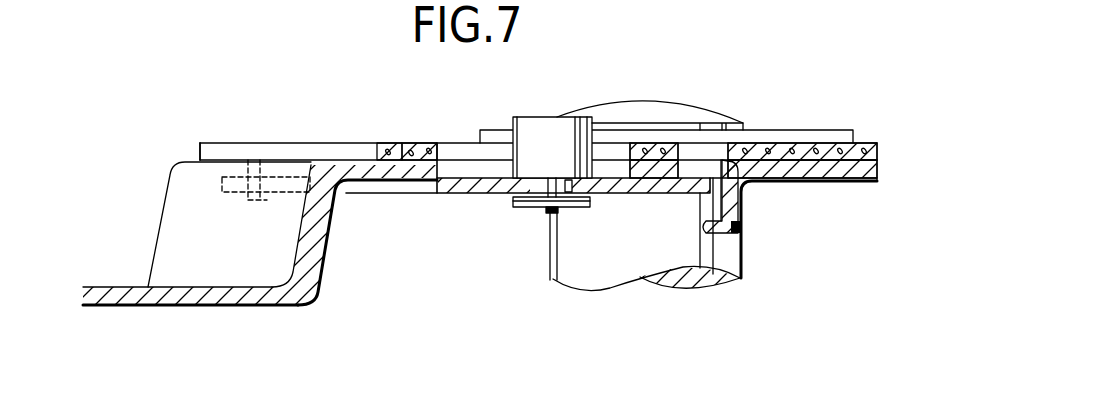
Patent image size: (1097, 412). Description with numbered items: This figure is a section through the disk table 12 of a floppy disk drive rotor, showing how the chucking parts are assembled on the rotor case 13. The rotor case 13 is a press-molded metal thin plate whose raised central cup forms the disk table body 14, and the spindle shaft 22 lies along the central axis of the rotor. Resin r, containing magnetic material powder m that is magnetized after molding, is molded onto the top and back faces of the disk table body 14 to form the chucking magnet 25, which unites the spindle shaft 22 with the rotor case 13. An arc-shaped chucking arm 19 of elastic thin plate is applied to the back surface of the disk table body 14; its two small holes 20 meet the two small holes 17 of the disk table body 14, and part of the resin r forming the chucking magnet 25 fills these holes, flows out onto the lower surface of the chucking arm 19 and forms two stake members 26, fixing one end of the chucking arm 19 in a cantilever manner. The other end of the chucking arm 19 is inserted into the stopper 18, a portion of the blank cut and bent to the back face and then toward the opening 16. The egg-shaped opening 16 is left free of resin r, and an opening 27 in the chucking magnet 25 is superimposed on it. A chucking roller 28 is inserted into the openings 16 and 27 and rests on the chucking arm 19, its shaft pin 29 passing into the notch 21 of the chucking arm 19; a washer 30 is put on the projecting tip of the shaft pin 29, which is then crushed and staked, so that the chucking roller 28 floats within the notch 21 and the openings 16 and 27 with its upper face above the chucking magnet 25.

The disk table 12 is at (206, 132).
The rotor case 13 is at (106, 279).
The disk table body 14 is at (176, 168).
The opening 16 is at (442, 170).
The small holes 17 is at (249, 160).
The stopper 18 is at (728, 240).
The chucking arm 19 is at (373, 208).
The small holes 20 is at (245, 196).
The notch 21 is at (567, 193).
The spindle shaft 22 is at (743, 270).
The chucking magnet 25 is at (322, 143).
The stake members 26 is at (262, 201).
The opening 27 is at (440, 147).
The chucking roller 28 is at (527, 117).
The shaft pin 29 is at (548, 213).
The washer 30 is at (522, 207).
The resin r is at (386, 143).
The magnetic material powder m is at (412, 143).